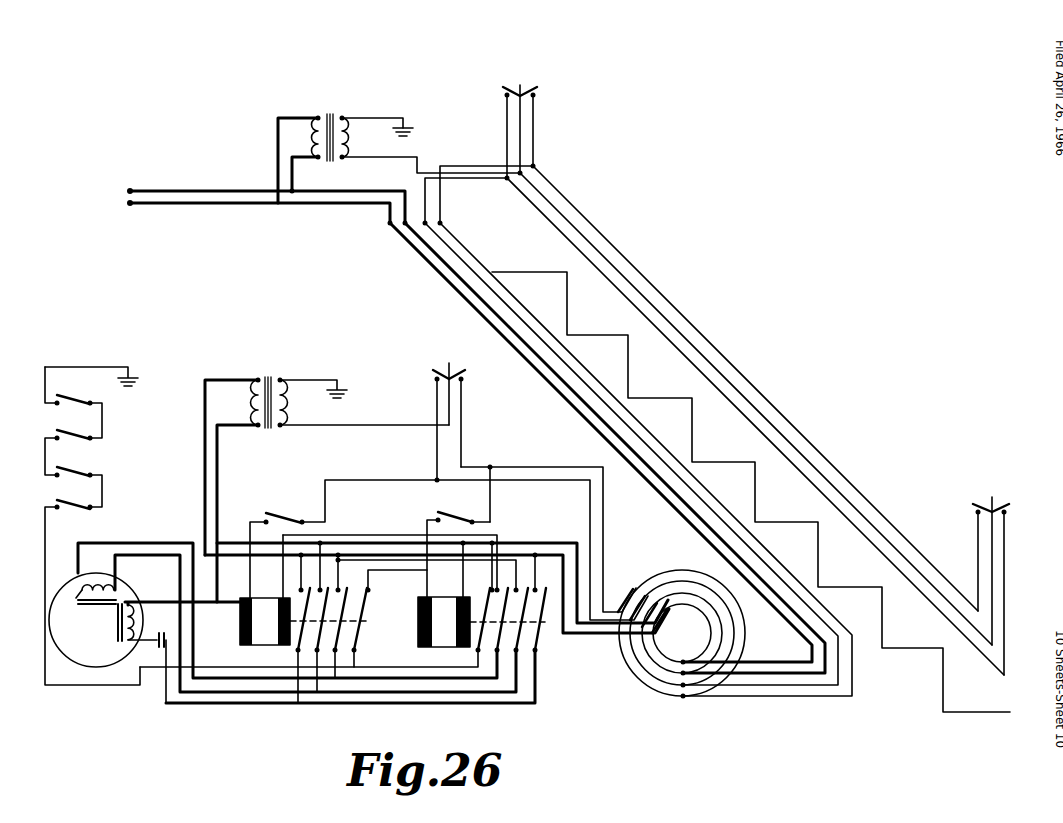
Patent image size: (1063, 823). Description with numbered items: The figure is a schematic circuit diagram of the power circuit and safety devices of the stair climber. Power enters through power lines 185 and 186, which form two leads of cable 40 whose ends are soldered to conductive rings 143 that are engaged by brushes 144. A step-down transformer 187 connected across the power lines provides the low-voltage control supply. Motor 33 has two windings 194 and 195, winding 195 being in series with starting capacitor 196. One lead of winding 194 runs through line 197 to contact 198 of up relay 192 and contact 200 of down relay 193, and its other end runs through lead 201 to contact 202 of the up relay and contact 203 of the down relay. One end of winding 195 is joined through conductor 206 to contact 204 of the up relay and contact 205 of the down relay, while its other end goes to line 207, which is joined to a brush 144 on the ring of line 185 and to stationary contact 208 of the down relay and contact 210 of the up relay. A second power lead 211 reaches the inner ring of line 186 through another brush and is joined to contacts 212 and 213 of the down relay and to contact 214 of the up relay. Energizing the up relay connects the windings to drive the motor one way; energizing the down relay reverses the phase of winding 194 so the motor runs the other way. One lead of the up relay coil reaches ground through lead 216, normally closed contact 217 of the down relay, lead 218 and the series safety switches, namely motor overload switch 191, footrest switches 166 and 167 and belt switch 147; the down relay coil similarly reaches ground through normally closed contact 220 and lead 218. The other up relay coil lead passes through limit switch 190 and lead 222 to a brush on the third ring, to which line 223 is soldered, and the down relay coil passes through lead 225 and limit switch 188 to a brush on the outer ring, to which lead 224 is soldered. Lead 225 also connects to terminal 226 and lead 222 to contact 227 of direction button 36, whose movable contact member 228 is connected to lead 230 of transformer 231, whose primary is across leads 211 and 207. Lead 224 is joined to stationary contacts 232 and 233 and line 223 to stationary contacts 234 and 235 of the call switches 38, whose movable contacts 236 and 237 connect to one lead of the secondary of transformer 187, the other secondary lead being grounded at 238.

The motor 33 is at (60, 685).
The direction button 36 is at (450, 364).
The call switches 38 is at (540, 87).
The cable 40 is at (426, 269).
The conductive rings 143 is at (660, 697).
The brush 144 is at (620, 590).
The belt switch 147 is at (62, 398).
The footrest switch 166 is at (78, 471).
The footrest switch 167 is at (66, 429).
The power line 185 is at (158, 191).
The power line 186 is at (196, 203).
The step-down transformer 187 is at (318, 116).
The limit switch 188 is at (446, 516).
The limit switch 190 is at (288, 518).
The motor overload switch 191 is at (56, 498).
The up relay 192 is at (240, 624).
The down relay 193 is at (418, 626).
The winding 194 is at (87, 606).
The winding 195 is at (124, 640).
The starting capacitor 196 is at (140, 660).
The line 197 is at (118, 543).
The contact 198 is at (340, 598).
The contact 200 is at (474, 703).
The lead 201 is at (150, 558).
The contact 202 is at (298, 654).
The contact 203 is at (538, 596).
The contact 204 is at (282, 598).
The contact 205 is at (540, 640).
The conductor 206 is at (245, 703).
The line 207 is at (240, 539).
The stationary contact 208 is at (500, 558).
The contact 210 is at (330, 544).
The power lead 211 is at (400, 551).
The contact 212 is at (531, 597).
The contact 213 is at (341, 560).
The contact 214 is at (292, 545).
The lead 216 is at (408, 533).
The normally closed contact 217 is at (476, 600).
The lead 218 is at (45, 541).
The normally closed contact 220 is at (369, 589).
The lead 222 is at (380, 479).
The line 223 is at (455, 242).
The lead 224 is at (427, 201).
The lead 225 is at (526, 468).
The terminal 226 is at (463, 384).
The contact 227 is at (435, 383).
The movable contact member 228 is at (444, 370).
The lead 230 is at (360, 426).
The transformer 231 is at (272, 380).
The stationary contact 232 is at (533, 100).
The stationary contact 233 is at (976, 513).
The stationary contact 234 is at (507, 99).
The stationary contact 235 is at (1006, 513).
The movable contact 236 is at (519, 86).
The movable contact 237 is at (988, 498).
The ground 238 is at (405, 134).